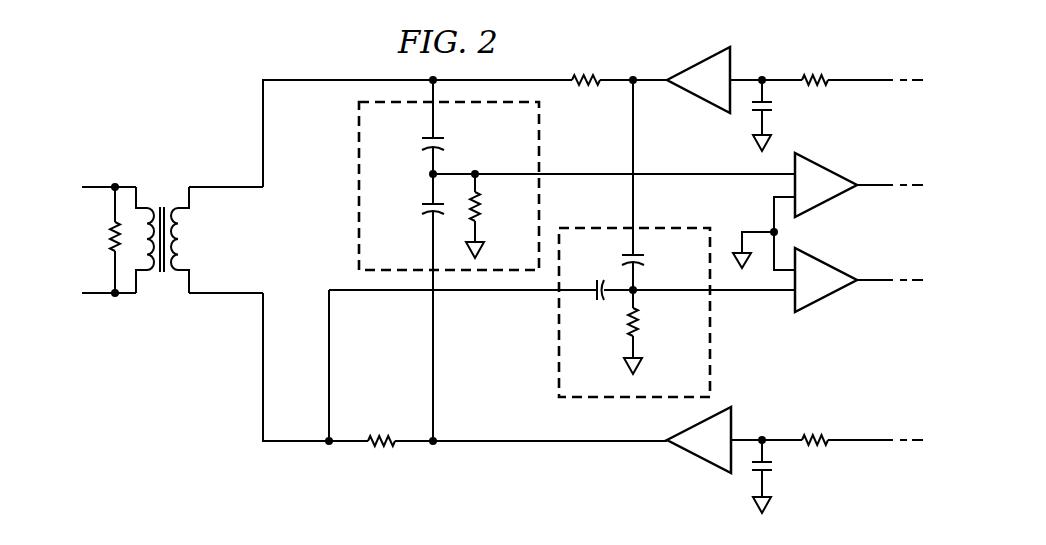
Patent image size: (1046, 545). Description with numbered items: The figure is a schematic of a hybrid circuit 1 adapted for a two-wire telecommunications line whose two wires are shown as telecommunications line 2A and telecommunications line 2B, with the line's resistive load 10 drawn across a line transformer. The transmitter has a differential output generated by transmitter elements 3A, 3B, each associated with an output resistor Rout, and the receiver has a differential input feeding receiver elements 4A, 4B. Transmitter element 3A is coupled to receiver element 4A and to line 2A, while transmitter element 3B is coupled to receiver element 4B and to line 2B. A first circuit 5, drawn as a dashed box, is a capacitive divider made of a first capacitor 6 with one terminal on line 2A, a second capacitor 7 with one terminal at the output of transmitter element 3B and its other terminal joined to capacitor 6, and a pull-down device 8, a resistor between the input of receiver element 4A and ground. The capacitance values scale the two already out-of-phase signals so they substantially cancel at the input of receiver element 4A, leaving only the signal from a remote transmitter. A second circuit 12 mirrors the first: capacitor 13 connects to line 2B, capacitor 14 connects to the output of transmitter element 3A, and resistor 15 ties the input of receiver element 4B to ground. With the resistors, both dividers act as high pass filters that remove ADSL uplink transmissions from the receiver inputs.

The hybrid circuit 1 is at (336, 133).
The telecommunications line 2A is at (294, 79).
The telecommunications line 2B is at (294, 442).
The transmitter element 3A is at (699, 62).
The transmitter element 3B is at (698, 458).
The receiver element 4A is at (826, 168).
The receiver element 4B is at (829, 297).
The first circuit 5 is at (357, 207).
The first capacitor 6 is at (423, 150).
The second capacitor 7 is at (423, 208).
The pull-down device 8 is at (481, 212).
The resistive load 10 is at (113, 236).
The second circuit 12 is at (556, 353).
The capacitor 13 is at (600, 302).
The capacitor 14 is at (624, 262).
The resistor 15 is at (641, 324).